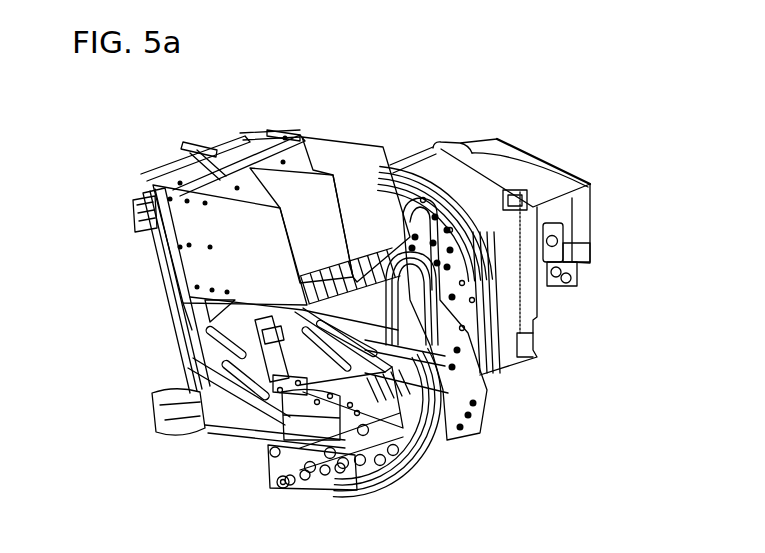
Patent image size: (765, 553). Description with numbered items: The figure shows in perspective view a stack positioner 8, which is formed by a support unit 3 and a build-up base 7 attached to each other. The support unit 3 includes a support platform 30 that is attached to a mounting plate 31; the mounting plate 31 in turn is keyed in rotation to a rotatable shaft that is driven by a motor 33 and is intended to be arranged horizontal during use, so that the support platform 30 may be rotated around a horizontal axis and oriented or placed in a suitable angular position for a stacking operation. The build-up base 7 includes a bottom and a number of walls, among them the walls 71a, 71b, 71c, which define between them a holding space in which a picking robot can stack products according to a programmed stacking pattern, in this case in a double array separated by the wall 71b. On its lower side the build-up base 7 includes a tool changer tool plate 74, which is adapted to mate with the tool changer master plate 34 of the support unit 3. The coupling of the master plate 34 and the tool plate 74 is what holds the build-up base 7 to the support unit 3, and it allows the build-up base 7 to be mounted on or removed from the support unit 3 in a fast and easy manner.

The stack positioner 8 is at (81, 152).
The build-up base 7 is at (125, 317).
The wall 71a is at (233, 225).
The wall 71b is at (280, 186).
The wall 71c is at (362, 180).
The support unit 3 is at (555, 400).
The mounting plate 31 is at (487, 280).
The motor 33 is at (572, 233).
The support platform 30 is at (468, 428).
The tool changer tool plate 74 is at (268, 460).
The tool changer master plate 34 is at (283, 482).